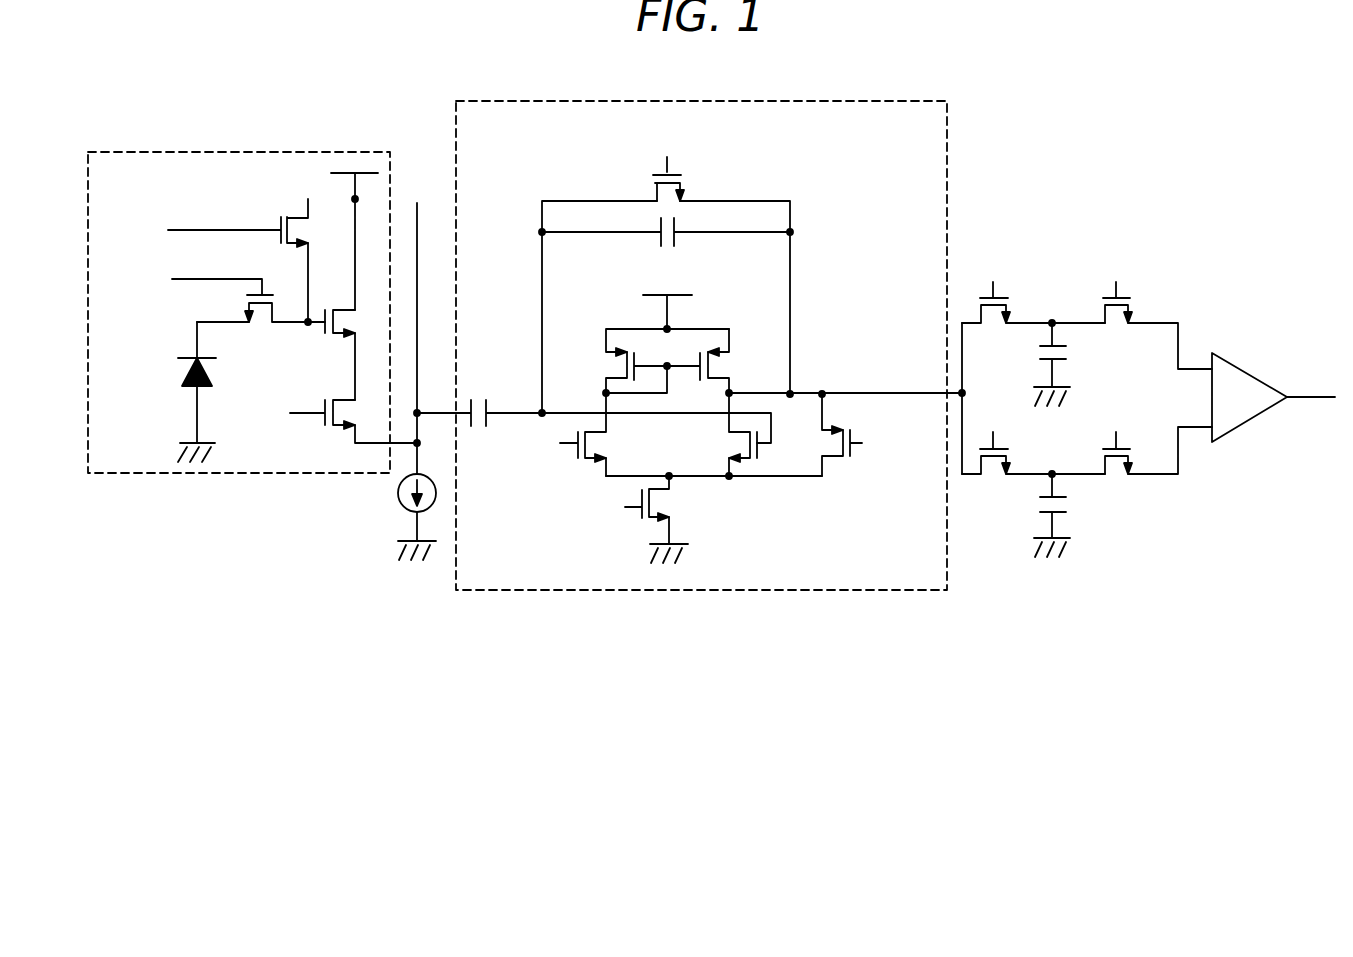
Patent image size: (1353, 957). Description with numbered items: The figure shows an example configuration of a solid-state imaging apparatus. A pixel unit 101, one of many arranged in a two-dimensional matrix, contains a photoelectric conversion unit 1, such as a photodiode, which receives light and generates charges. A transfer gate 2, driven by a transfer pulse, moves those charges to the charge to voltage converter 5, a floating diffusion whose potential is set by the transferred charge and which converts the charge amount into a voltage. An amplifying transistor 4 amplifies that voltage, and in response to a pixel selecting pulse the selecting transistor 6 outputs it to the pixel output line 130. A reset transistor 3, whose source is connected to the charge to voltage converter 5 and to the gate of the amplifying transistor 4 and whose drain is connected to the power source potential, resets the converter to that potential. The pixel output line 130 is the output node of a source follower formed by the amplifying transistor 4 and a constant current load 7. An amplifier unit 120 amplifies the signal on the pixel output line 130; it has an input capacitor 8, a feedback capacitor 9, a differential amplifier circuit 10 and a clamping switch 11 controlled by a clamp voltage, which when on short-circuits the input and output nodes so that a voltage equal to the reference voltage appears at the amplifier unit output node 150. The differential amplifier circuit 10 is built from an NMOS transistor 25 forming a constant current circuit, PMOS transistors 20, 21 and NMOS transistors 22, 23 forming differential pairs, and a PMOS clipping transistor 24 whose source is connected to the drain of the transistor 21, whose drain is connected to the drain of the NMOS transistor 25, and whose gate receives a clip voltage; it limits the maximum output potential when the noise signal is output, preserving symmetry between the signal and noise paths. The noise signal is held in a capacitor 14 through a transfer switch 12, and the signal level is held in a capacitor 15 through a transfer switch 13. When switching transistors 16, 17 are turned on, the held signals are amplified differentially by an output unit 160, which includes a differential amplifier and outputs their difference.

The photoelectric conversion unit 1 is at (186, 378).
The transfer gate 2 is at (257, 322).
The reset transistor 3 is at (278, 224).
The amplifying transistor 4 is at (352, 322).
The charge to voltage converter 5 is at (290, 326).
The selecting transistor 6 is at (327, 432).
The constant current load 7 is at (397, 493).
The input capacitor 8 is at (478, 430).
The feedback capacitor 9 is at (680, 240).
The differential amplifier circuit 10 is at (755, 510).
The clamping switch 11 is at (655, 193).
The transfer switch 12 is at (1012, 298).
The transfer switch 13 is at (1010, 452).
The capacitor 14 is at (1070, 352).
The capacitor 15 is at (1070, 503).
The switching transistor 16 is at (1135, 298).
The switching transistor 17 is at (1132, 452).
The PMOS transistor 20 is at (608, 368).
The PMOS transistor 21 is at (727, 368).
The NMOS transistor 22 is at (575, 455).
The NMOS transistor 23 is at (761, 450).
The PMOS clipping transistor 24 is at (838, 462).
The NMOS transistor 25 is at (670, 507).
The pixel unit 101 is at (306, 150).
The amplifier unit 120 is at (456, 148).
The pixel output line 130 is at (440, 413).
The amplifier unit output node 150 is at (876, 392).
The output unit 160 is at (1240, 368).